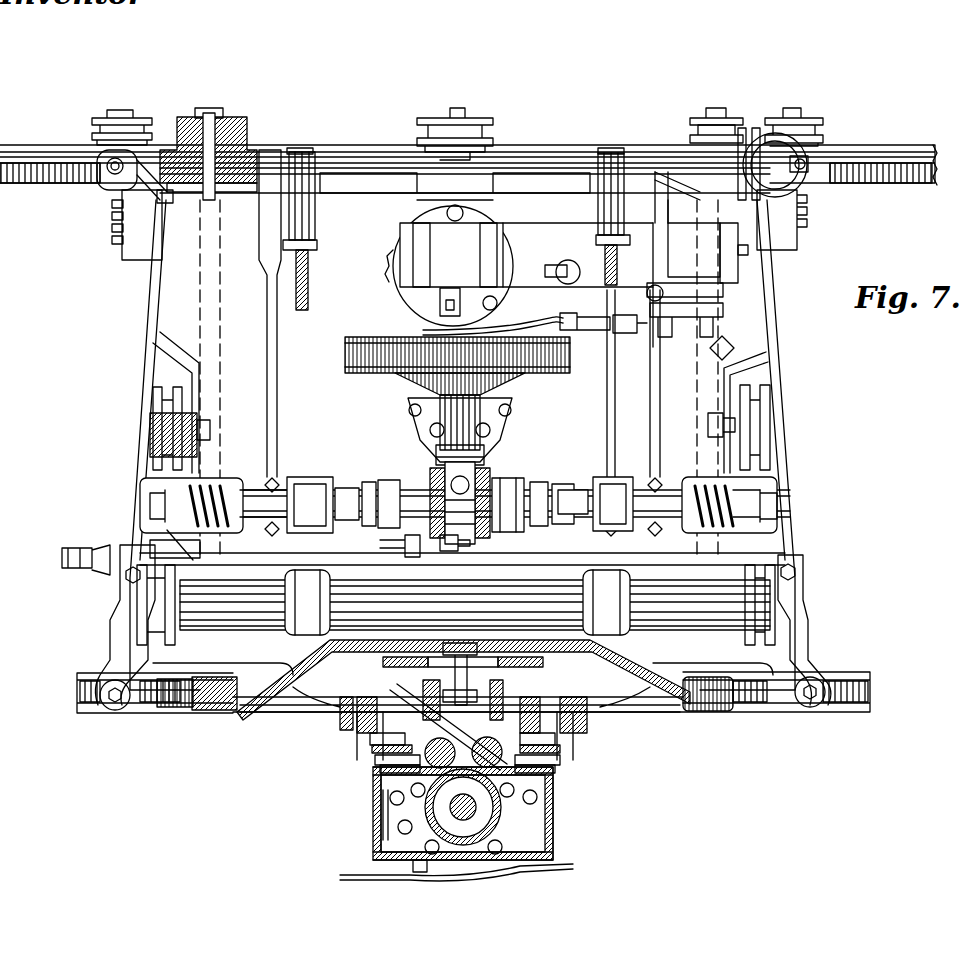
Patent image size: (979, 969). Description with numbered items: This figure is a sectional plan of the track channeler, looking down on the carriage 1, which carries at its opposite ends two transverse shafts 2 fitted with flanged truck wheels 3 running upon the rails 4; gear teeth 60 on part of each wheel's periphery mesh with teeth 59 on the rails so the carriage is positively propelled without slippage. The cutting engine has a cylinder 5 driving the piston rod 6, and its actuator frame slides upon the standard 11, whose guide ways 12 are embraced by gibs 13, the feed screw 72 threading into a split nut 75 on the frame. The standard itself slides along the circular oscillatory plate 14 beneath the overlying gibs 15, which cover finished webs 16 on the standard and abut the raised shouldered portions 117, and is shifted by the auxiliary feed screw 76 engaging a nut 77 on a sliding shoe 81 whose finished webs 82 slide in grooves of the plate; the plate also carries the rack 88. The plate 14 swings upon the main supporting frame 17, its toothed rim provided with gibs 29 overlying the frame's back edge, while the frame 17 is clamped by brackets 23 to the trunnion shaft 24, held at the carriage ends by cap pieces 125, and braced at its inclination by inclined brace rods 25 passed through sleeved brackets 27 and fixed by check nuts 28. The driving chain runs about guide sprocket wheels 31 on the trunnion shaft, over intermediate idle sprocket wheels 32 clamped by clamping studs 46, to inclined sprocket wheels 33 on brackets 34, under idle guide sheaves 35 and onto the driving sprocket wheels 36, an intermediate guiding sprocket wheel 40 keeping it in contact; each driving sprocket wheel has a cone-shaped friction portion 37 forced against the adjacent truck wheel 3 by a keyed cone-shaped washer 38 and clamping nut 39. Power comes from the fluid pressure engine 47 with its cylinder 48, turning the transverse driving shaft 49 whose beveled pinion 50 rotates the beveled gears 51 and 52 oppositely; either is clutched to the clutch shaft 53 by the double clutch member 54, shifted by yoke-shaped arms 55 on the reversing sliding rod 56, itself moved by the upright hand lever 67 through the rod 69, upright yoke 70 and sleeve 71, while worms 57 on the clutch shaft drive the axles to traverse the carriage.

The carriage 1 is at (150, 302).
The transverse shaft 2 is at (210, 192).
The flanged truck wheel 3 is at (283, 152).
The rail 4 is at (68, 185).
The cylinder 5 is at (505, 822).
The piston rod 6 is at (476, 808).
The standard 11 is at (372, 750).
The guide way 12 is at (385, 772).
The gib 13 is at (378, 760).
The oscillatory plate 14 is at (312, 700).
The overlying gib 15 is at (370, 738).
The finished web 16 is at (385, 707).
The main supporting frame 17 is at (650, 672).
The bracket 23 is at (310, 636).
The trunnion shaft 24 is at (478, 592).
The inclined brace rod 25 is at (310, 278).
The sleeved bracket 27 is at (315, 212).
The check nut 28 is at (313, 150).
The gib 29 is at (215, 676).
The guide sprocket wheel 31 is at (147, 612).
The intermediate idle sprocket wheel 32 is at (160, 395).
The inclined sprocket wheel 33 is at (140, 225).
The bracket 34 is at (133, 170).
The idle guide sheave 35 is at (92, 122).
The driving sprocket wheel 36 is at (230, 120).
The cone-shaped friction portion 37 is at (185, 152).
The cone-shaped washer 38 is at (200, 115).
The clamping nut 39 is at (243, 131).
The intermediate guiding sprocket wheel 40 is at (470, 118).
The clamping stud 46 is at (190, 425).
The fluid pressure engine 47 is at (519, 265).
The cylinder 48 is at (585, 280).
The transverse driving shaft 49 is at (462, 405).
The beveled pinion 50 is at (432, 470).
The beveled gear 51 is at (495, 470).
The beveled gear 52 is at (410, 472).
The clutch shaft 53 is at (345, 488).
The double clutch member 54 is at (372, 481).
The yoke-shaped arm 55 is at (308, 478).
The reversing sliding rod 56 is at (545, 508).
The worm 57 is at (222, 482).
The teeth 59 is at (900, 182).
The gear teeth 60 is at (182, 198).
The upright hand lever 67 is at (70, 548).
The rod 69 is at (143, 505).
The upright yoke 70 is at (410, 557).
The sleeve 71 is at (450, 552).
The feed screw 72 is at (413, 707).
The split nut 75 is at (400, 790).
The auxiliary feed screw 76 is at (505, 735).
The nut 77 is at (463, 807).
The sliding shoe 81 is at (448, 727).
The finished web 82 is at (432, 738).
The rack 88 is at (540, 660).
The raised shouldered portion 117 is at (350, 730).
The cap piece 125 is at (120, 588).